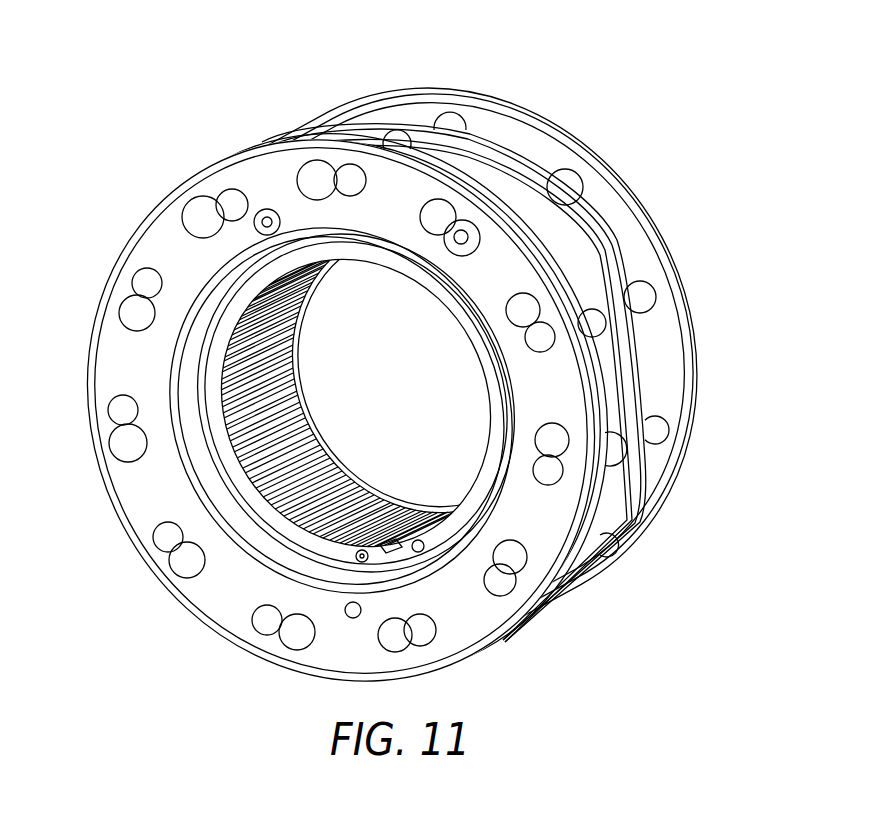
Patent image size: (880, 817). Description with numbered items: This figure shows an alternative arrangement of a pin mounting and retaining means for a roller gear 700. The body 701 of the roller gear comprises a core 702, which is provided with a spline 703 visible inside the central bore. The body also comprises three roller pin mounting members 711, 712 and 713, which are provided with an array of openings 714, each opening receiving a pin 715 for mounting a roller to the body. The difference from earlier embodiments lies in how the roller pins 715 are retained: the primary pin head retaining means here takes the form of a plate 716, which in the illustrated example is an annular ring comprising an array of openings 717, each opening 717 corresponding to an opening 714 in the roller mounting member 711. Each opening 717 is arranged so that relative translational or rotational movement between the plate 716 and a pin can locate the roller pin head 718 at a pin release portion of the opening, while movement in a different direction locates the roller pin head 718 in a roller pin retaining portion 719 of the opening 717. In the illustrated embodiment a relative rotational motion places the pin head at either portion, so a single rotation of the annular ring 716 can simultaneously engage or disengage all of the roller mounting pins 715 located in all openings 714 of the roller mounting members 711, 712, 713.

The roller gear 700 is at (313, 86).
The body 701 is at (688, 212).
The core 702 is at (200, 470).
The spline 703 is at (282, 392).
The roller pin mounting member 711 is at (506, 644).
The roller pin mounting member 712 is at (640, 478).
The roller pin mounting member 713 is at (699, 358).
The opening 714 is at (646, 297).
The pin 715 is at (568, 184).
The plate 716 is at (118, 358).
The opening 717 is at (200, 220).
The roller pin head 718 is at (453, 252).
The roller pin retaining portion 719 is at (246, 200).